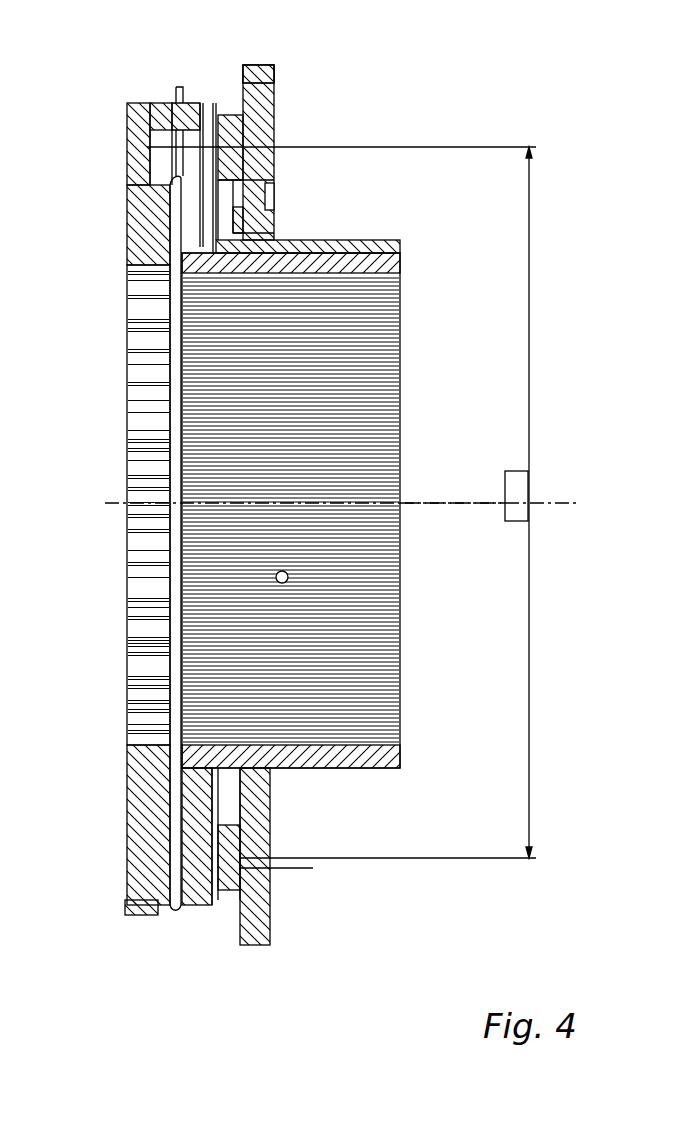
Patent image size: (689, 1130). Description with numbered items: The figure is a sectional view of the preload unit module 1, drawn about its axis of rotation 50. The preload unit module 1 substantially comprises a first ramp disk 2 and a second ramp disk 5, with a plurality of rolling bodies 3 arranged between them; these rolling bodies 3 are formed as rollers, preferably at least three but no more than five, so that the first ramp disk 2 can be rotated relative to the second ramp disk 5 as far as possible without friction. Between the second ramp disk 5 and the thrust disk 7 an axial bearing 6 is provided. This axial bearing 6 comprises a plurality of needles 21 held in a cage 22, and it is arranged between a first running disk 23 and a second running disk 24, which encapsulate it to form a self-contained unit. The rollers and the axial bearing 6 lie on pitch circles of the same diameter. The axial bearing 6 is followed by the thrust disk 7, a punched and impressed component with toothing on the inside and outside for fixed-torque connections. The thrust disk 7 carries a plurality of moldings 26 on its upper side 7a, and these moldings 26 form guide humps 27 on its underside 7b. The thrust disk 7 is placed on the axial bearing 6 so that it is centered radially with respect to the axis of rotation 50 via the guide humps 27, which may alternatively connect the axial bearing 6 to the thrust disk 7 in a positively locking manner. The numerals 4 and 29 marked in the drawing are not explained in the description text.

The preload unit module 1 is at (86, 506).
The first ramp disk 2 is at (128, 230).
The rolling bodies 3 is at (150, 132).
The shaft 4 is at (153, 912).
The second ramp disk 5 is at (215, 103).
The axial bearing 6 is at (228, 115).
The thrust disk 7 is at (278, 106).
The upper side of thrust disk 7a is at (276, 92).
The underside of thrust disk 7b is at (336, 240).
The needles 21 is at (228, 897).
The cage 22 is at (240, 828).
The first running disk 23 is at (212, 873).
The second running disk 24 is at (296, 868).
The moldings 26 is at (268, 200).
The guide humps 27 is at (277, 172).
The coil / winding body 29 is at (400, 610).
The axis of rotation 50 is at (433, 503).